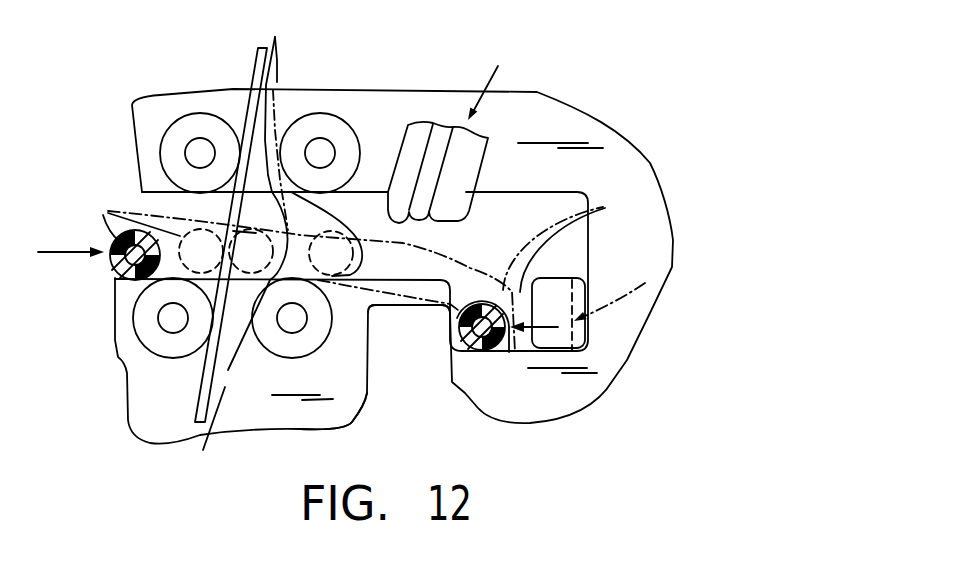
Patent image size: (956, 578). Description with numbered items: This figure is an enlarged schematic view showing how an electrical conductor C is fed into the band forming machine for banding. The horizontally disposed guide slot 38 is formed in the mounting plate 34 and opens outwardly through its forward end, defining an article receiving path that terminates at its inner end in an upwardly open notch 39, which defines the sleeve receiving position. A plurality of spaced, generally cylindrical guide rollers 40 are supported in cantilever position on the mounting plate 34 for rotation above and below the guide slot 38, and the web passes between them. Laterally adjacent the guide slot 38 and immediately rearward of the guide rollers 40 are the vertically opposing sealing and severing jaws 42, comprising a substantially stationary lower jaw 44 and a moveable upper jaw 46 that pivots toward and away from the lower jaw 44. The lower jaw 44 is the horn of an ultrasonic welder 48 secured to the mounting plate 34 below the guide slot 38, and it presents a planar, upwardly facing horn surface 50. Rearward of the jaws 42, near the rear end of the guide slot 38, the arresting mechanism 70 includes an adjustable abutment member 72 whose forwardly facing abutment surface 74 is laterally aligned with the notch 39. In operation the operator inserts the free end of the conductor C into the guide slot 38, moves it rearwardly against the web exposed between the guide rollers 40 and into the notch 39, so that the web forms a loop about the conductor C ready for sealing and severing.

The mounting plate 34 is at (142, 373).
The guide slot 38 is at (168, 196).
The notch 39 is at (465, 295).
The guide rollers 40 is at (205, 114).
The sealing and severing jaws 42 is at (389, 131).
The lower jaw 44 is at (463, 389).
The upper jaw 46 is at (472, 165).
The ultrasonic welder 48 is at (380, 378).
The horn surface 50 is at (366, 302).
The arresting mechanism 70 is at (609, 292).
The abutment member 72 is at (560, 287).
The abutment surface 74 is at (579, 237).
The electrical conductor C is at (506, 366).